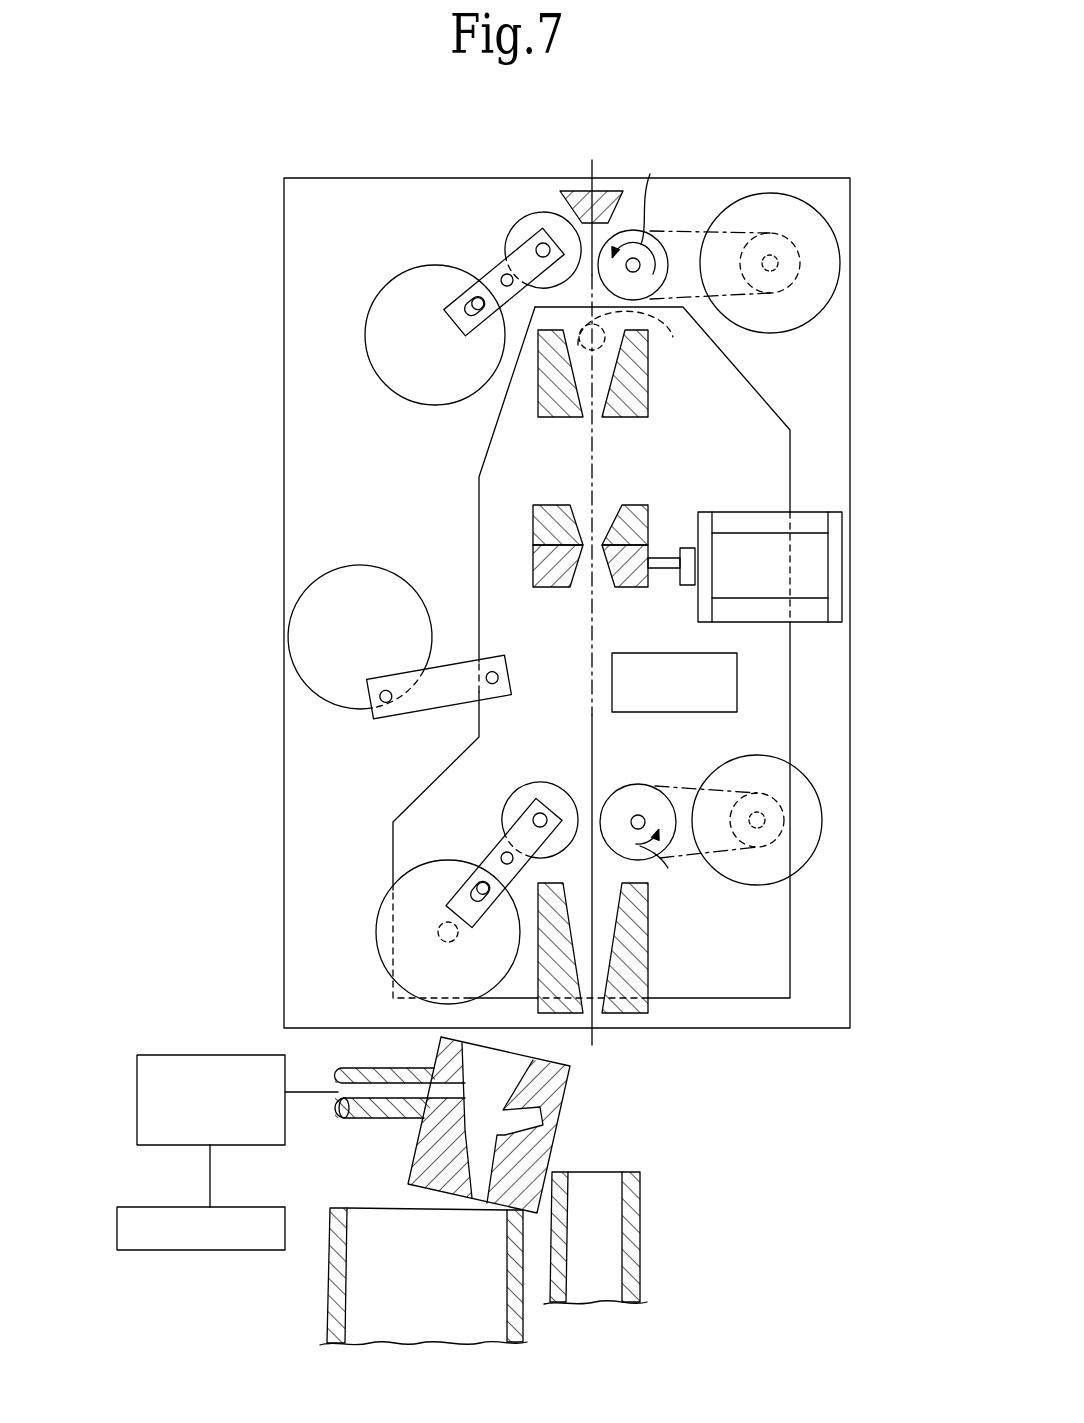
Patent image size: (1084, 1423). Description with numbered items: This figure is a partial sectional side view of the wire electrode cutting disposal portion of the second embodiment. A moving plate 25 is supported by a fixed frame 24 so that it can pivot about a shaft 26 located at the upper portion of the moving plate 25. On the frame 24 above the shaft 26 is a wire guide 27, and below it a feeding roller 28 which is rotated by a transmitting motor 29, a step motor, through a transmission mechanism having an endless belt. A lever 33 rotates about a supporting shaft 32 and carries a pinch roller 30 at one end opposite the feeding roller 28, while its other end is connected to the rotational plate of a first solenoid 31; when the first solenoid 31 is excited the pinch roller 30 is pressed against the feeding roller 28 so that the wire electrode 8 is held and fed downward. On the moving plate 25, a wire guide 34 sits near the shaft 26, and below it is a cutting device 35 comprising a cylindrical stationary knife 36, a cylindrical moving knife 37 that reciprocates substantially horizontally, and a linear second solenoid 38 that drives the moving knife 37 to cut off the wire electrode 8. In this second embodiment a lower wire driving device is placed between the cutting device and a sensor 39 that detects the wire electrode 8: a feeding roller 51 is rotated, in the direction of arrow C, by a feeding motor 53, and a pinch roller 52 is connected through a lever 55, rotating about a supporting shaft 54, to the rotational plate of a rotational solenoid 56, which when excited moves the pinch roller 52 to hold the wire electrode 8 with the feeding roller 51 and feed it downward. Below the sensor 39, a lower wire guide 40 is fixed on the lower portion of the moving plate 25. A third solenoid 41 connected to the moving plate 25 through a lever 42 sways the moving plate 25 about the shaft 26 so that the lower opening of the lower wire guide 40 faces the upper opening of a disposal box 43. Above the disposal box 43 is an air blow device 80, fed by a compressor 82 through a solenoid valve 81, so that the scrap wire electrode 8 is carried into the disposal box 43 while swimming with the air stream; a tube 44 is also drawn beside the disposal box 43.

The wire electrode 8 is at (590, 162).
The fixed frame 24 is at (853, 383).
The moving plate 25 is at (497, 451).
The shaft 26 is at (637, 342).
The wire guide 27 is at (613, 195).
The feeding roller 28 is at (648, 246).
The transmitting motor 29 is at (780, 222).
The pinch roller 30 is at (535, 223).
The first solenoid 31 is at (390, 307).
The supporting shaft 32 is at (498, 275).
The lever 33 is at (522, 263).
The wire guide 34 is at (633, 384).
The cutting device 35 is at (765, 508).
The stationary knife 36 is at (632, 527).
The moving knife 37 is at (552, 574).
The second solenoid 38 is at (803, 517).
The sensor 39 is at (723, 682).
The lower wire guide 40 is at (633, 971).
The third solenoid 41 is at (352, 585).
The lever 42 is at (452, 683).
The disposal box 43 is at (440, 1343).
The tube 44 is at (642, 1226).
The feeding roller 51 is at (630, 797).
The pinch roller 52 is at (528, 795).
The feeding motor 53 is at (752, 874).
The supporting shaft 54 is at (498, 852).
The lever 55 is at (525, 830).
The rotational solenoid 56 is at (413, 910).
The air blow device 80 is at (562, 1143).
The solenoid valve 81 is at (286, 1130).
The compressor 82 is at (263, 1252).